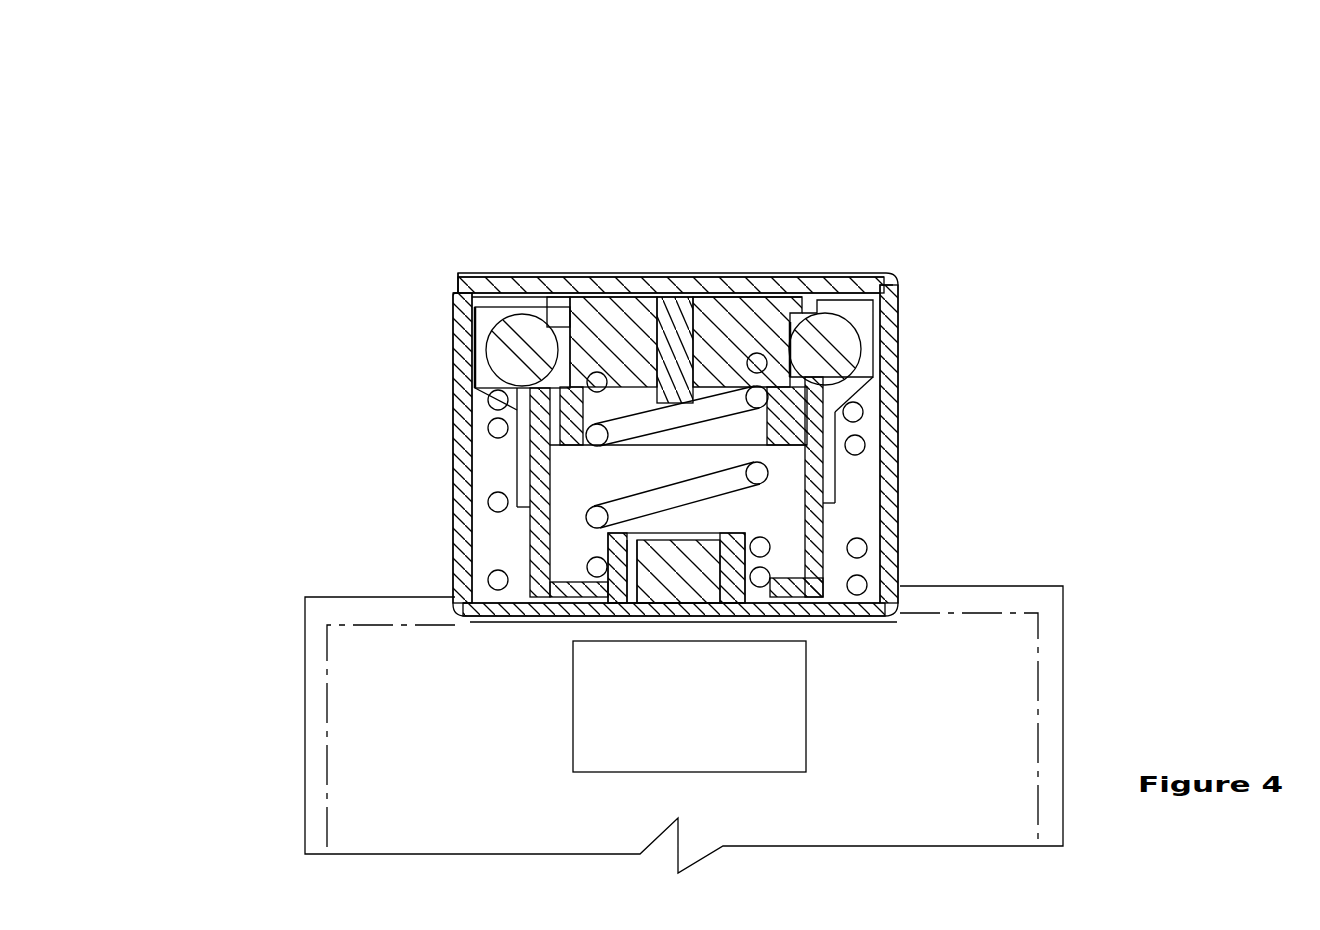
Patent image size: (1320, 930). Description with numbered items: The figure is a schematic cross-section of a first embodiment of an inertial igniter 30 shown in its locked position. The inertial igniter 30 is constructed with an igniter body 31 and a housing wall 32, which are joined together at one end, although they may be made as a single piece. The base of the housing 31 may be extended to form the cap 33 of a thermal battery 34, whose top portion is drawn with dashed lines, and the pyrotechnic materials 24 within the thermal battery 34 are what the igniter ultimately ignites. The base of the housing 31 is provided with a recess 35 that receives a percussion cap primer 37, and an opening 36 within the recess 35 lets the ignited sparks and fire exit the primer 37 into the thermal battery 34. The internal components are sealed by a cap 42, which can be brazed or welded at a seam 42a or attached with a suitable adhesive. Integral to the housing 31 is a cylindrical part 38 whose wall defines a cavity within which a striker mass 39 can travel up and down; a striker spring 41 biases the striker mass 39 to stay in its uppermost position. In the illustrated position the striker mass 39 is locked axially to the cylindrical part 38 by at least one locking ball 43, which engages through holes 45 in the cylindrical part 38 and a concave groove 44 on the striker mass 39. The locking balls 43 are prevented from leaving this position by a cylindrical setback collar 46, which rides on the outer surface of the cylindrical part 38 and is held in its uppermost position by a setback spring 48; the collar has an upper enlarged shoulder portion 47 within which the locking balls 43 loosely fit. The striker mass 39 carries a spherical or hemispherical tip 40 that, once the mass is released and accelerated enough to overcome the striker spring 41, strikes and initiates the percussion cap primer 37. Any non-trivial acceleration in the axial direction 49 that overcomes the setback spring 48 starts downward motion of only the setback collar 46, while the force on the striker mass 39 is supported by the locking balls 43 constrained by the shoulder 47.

The pyrotechnic materials 24 is at (826, 746).
The inertial igniter 30 is at (1027, 259).
The igniter body 31 is at (792, 622).
The housing wall 32 is at (919, 412).
The cap 33 is at (1001, 570).
The thermal battery 34 is at (499, 749).
The recess 35 is at (611, 579).
The opening 36 is at (633, 632).
The percussion cap primer 37 is at (704, 595).
The cylindrical part 38 is at (505, 524).
The striker mass 39 is at (601, 362).
The tip 40 is at (643, 413).
The striker spring 41 is at (571, 518).
The cap 42 is at (696, 261).
The seam 42a is at (444, 275).
The locking ball 43 is at (864, 291).
The groove 44 is at (573, 292).
The holes 45 is at (529, 297).
The cylindrical setback collar 46 is at (867, 476).
The upper enlarged shoulder portion 47 is at (592, 362).
The setback spring 48 is at (895, 527).
The axial direction 49 is at (660, 58).